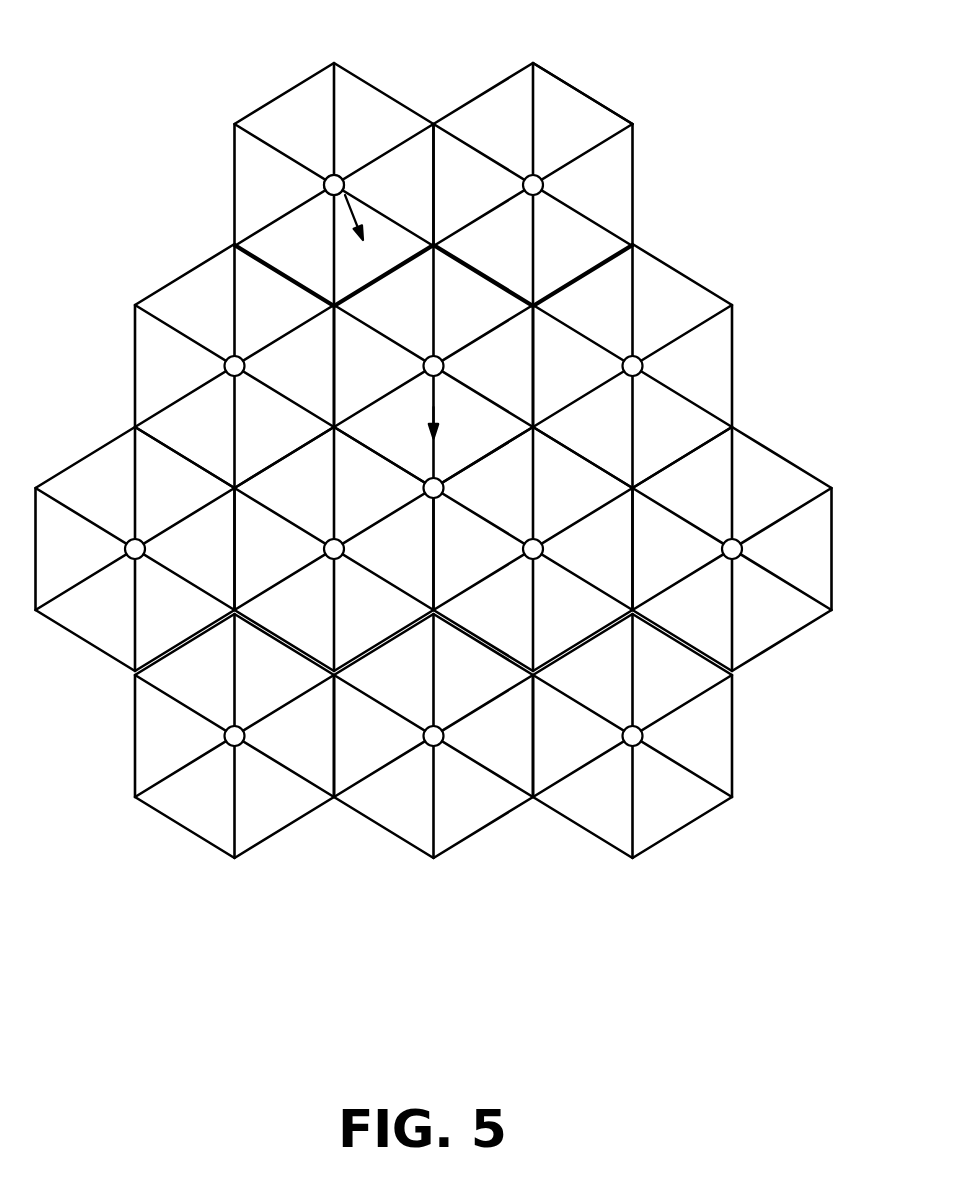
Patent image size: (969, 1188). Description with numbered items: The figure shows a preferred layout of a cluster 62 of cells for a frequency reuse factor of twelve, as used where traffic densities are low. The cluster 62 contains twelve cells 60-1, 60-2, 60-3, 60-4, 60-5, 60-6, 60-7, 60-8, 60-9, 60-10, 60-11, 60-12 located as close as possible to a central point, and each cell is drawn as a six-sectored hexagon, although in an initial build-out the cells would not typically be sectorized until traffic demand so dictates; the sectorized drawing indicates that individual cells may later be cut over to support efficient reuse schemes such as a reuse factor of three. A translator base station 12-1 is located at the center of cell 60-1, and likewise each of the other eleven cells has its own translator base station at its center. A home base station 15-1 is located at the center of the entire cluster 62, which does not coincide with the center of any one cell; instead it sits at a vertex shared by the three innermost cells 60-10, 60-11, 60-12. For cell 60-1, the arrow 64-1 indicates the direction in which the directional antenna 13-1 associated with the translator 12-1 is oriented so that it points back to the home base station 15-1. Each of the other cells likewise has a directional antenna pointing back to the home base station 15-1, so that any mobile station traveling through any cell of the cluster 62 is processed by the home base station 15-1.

The cell 60-1 is at (368, 82).
The cell 60-2 is at (573, 88).
The cell 60-3 is at (677, 268).
The cell 60-4 is at (777, 452).
The cell 60-5 is at (733, 730).
The cell 60-6 is at (455, 840).
The cell 60-7 is at (135, 755).
The cell 60-8 is at (102, 442).
The cell 60-9 is at (188, 270).
The cell 60-10 is at (492, 275).
The cell 60-11 is at (285, 460).
The cell 60-12 is at (593, 462).
The cluster 62 is at (605, 108).
The translator base station 12-1 is at (338, 178).
The directional antenna 13-1 is at (350, 193).
The arrow 64-1 is at (342, 208).
The home base station 15-1 is at (428, 480).